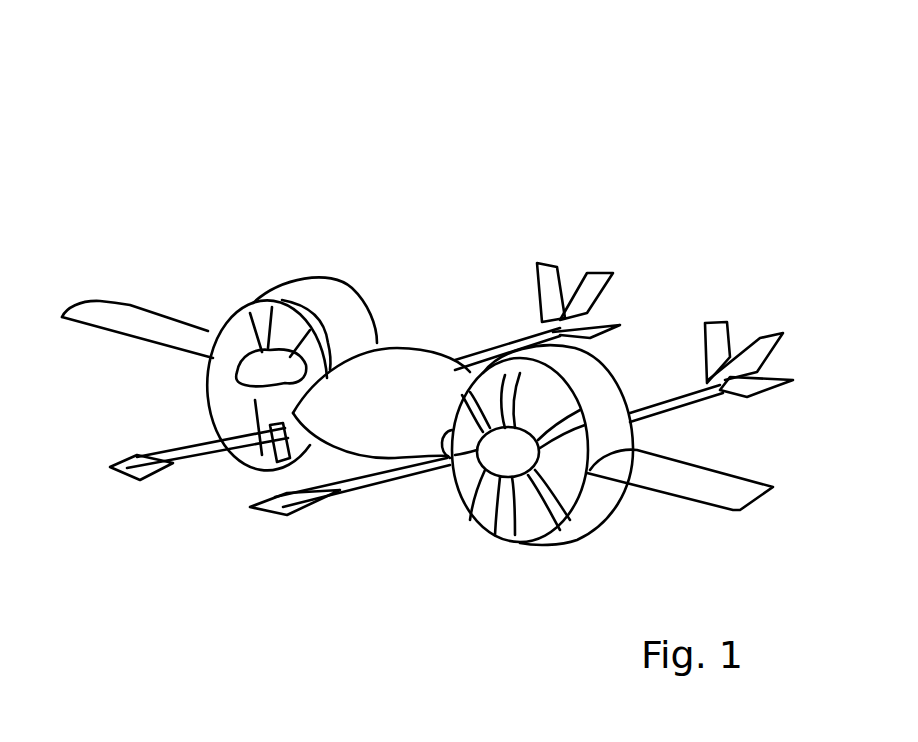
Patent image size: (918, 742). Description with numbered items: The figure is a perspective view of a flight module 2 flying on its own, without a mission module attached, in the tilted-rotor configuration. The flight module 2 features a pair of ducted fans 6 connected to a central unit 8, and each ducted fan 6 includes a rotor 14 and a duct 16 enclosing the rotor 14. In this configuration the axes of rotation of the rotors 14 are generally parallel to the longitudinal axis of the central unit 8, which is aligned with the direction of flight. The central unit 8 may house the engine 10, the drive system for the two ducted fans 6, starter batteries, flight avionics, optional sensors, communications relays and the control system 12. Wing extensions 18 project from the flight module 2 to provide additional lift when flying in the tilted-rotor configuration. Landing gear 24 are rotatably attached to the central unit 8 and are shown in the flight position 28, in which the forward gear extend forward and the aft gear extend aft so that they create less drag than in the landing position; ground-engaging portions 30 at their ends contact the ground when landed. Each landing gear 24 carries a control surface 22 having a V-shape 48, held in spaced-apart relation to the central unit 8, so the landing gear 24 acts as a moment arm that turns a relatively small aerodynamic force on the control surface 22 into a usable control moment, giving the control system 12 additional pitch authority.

The flight module 2 is at (250, 118).
The ducted fan 6 is at (320, 300).
The central unit 8 is at (411, 372).
The engine 10 is at (383, 372).
The control system 12 is at (448, 372).
The rotor 14 is at (237, 397).
The duct 16 is at (267, 295).
The wing extension 18 is at (113, 317).
The control surface 22 is at (560, 277).
The landing gear 24 is at (210, 450).
The flight position 28 is at (294, 623).
The ground-engaging portion 30 is at (137, 480).
The V-shape 48 is at (757, 337).